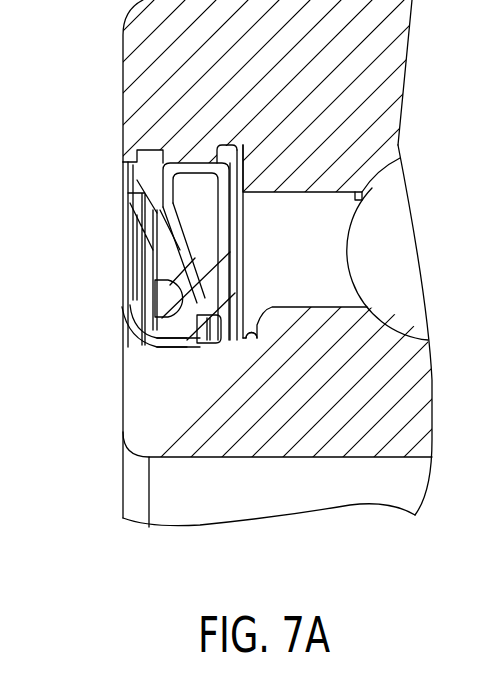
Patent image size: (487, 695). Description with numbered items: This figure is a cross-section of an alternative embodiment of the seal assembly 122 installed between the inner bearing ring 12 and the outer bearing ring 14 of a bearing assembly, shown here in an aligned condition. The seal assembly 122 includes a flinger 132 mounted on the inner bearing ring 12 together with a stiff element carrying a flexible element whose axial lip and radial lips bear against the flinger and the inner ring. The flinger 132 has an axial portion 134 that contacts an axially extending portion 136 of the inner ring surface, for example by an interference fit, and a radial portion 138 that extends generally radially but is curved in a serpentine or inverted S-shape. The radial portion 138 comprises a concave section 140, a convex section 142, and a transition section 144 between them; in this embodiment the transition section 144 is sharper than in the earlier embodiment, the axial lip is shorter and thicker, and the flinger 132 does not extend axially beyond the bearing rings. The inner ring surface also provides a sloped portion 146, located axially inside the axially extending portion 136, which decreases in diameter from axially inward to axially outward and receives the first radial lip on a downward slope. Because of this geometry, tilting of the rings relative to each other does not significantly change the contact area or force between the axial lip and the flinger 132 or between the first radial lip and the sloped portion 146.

The inner bearing ring 12 is at (410, 395).
The outer bearing ring 14 is at (377, 97).
The seal assembly 122 is at (102, 182).
The flinger 132 is at (102, 292).
The axial portion 134 is at (150, 345).
The axially extending portion 136 is at (165, 398).
The radial portion 138 is at (150, 328).
The concave section 140 is at (128, 302).
The convex section 142 is at (131, 238).
The transition section 144 is at (128, 274).
The sloped portion 146 is at (248, 332).